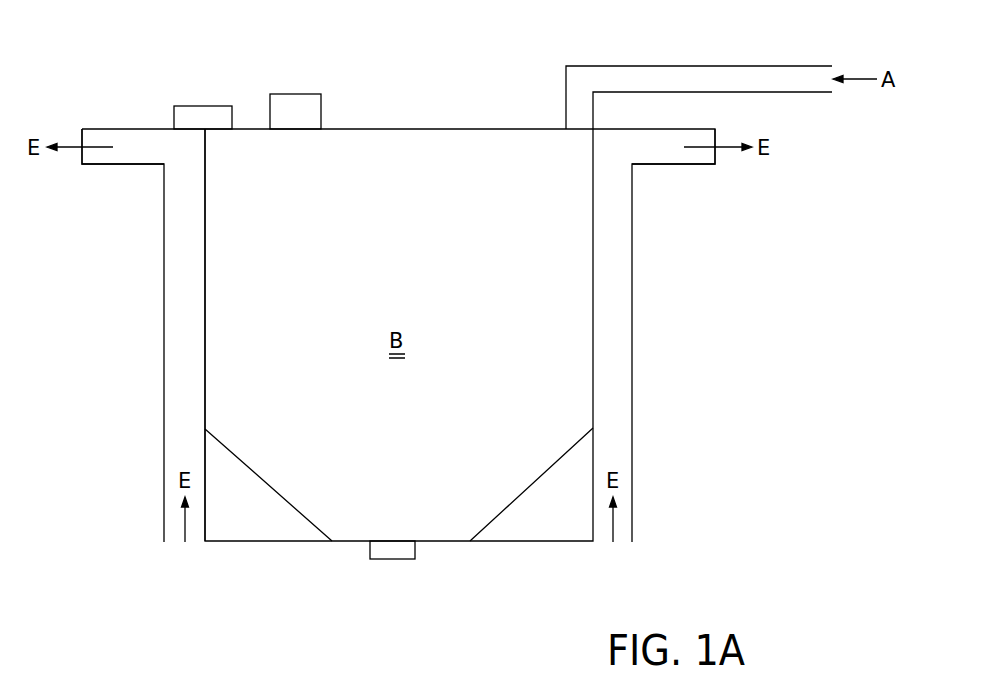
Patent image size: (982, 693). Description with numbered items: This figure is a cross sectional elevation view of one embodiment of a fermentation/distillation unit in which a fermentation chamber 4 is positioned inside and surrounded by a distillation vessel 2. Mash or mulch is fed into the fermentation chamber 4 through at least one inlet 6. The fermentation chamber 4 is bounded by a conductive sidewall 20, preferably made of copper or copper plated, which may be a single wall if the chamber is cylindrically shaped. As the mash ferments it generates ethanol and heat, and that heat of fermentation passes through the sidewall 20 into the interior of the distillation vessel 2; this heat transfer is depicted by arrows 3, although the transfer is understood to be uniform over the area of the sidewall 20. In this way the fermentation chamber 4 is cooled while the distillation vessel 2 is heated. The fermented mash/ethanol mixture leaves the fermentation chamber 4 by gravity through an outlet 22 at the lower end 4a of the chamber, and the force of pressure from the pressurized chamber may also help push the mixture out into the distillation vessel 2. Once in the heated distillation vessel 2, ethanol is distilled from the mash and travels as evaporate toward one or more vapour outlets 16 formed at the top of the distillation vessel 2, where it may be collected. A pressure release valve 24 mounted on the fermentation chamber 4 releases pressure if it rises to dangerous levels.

The distillation vessel 2 is at (144, 286).
The arrows 3 is at (188, 383).
The fermentation chamber 4 is at (433, 122).
The lower end 4a is at (517, 497).
The inlet 6 is at (797, 66).
The vapour outlets 16 is at (135, 129).
The sidewall 20 is at (205, 305).
The outlet 22 is at (415, 550).
The pressure release valve 24 is at (302, 94).